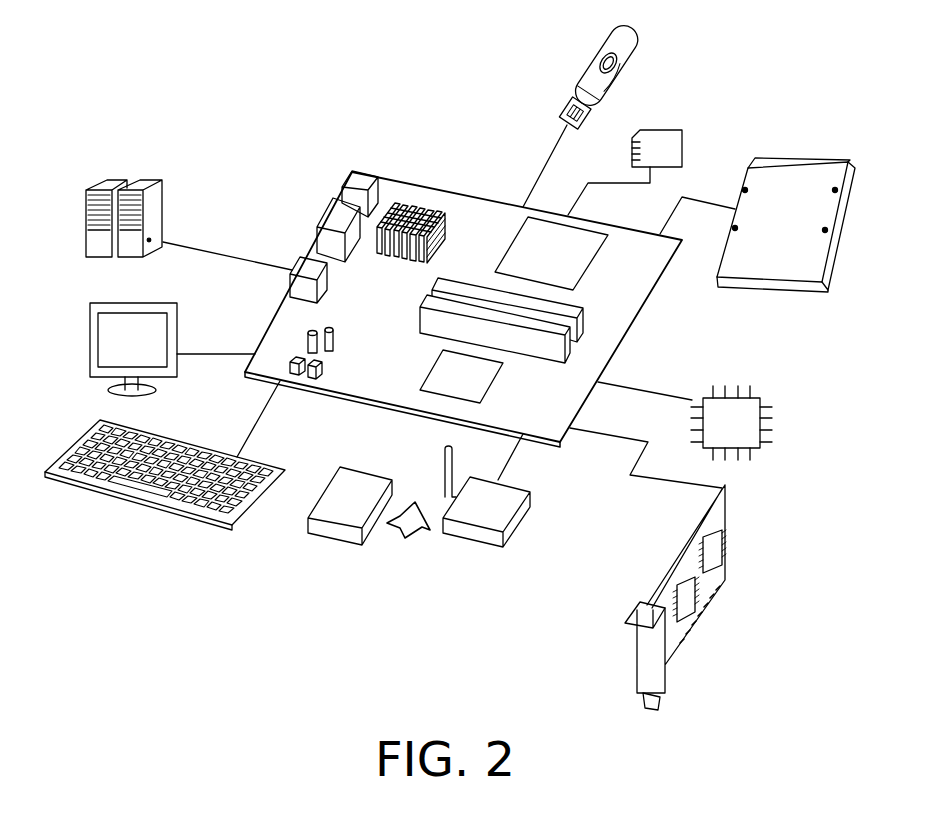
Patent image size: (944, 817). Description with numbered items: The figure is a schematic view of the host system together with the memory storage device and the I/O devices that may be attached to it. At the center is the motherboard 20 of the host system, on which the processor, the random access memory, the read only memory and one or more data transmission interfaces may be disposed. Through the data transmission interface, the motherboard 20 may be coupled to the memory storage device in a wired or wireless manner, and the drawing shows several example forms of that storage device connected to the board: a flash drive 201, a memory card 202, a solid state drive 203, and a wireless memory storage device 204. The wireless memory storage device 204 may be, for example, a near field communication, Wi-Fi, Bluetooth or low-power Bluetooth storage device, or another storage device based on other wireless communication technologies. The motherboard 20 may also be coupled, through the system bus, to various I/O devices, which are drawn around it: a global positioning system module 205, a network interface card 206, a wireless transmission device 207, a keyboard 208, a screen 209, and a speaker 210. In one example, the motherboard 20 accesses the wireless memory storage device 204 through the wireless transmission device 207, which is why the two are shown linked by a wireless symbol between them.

The motherboard 20 is at (465, 213).
The flash drive 201 is at (587, 65).
The memory card 202 is at (682, 138).
The solid state drive 203 is at (802, 158).
The wireless memory storage device 204 is at (323, 483).
The global positioning system module 205 is at (773, 420).
The network interface card 206 is at (728, 542).
The wireless transmission device 207 is at (523, 528).
The keyboard 208 is at (168, 510).
The screen 209 is at (88, 357).
The speaker 210 is at (85, 242).